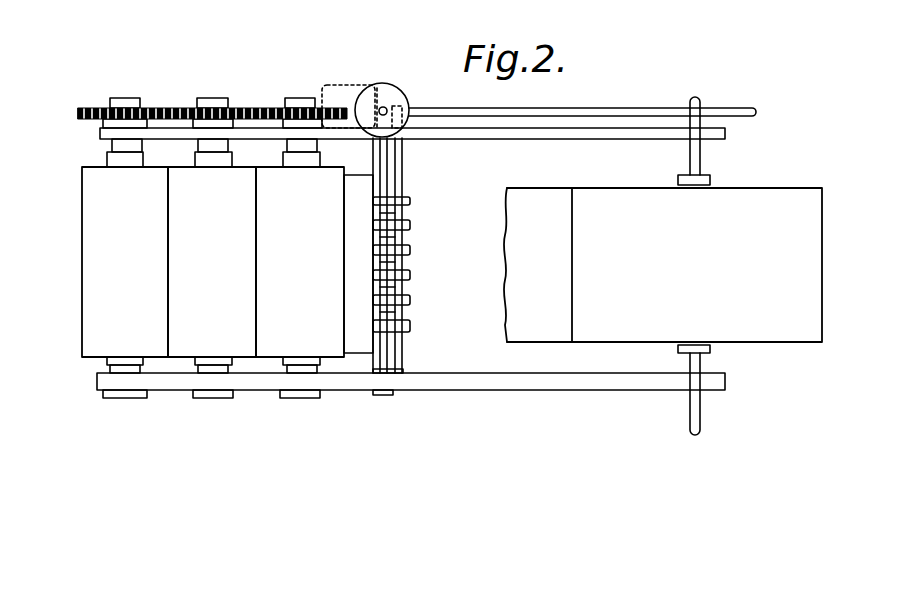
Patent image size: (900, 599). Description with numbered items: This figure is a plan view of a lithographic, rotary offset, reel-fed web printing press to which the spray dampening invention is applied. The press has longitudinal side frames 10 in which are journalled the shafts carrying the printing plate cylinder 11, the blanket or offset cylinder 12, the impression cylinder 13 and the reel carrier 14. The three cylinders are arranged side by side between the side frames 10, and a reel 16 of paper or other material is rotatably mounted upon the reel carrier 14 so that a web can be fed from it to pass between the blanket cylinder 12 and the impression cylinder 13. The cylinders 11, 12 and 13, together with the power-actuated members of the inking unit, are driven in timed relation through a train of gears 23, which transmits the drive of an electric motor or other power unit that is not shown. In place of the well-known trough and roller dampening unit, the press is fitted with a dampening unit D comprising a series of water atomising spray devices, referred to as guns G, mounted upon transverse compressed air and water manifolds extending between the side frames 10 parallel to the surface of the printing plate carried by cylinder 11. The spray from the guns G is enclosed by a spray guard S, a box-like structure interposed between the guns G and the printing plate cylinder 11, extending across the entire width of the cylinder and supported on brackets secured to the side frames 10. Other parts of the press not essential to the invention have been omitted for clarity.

The train of gears 23 is at (90, 107).
The longitudinal side frames 10 is at (158, 134).
The impression cylinder 13 is at (125, 262).
The blanket or offset cylinder 12 is at (212, 262).
The printing plate cylinder 11 is at (300, 262).
The spray guard S is at (362, 355).
The dampening unit D is at (413, 213).
The guns G is at (405, 250).
The reel carrier 14 is at (710, 178).
The reel 16 is at (790, 286).